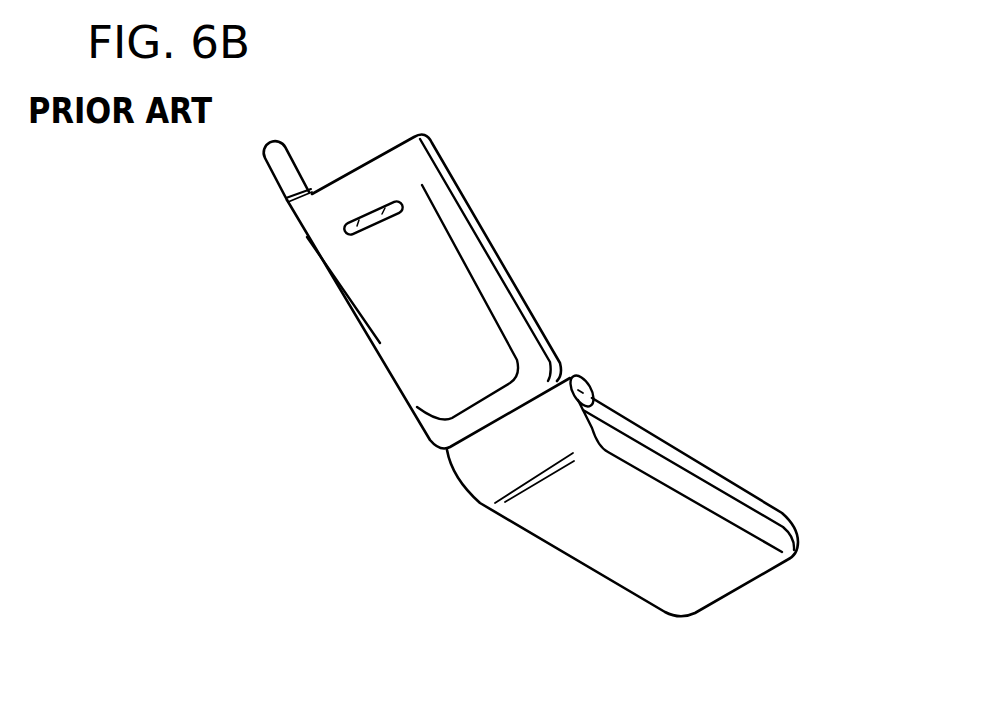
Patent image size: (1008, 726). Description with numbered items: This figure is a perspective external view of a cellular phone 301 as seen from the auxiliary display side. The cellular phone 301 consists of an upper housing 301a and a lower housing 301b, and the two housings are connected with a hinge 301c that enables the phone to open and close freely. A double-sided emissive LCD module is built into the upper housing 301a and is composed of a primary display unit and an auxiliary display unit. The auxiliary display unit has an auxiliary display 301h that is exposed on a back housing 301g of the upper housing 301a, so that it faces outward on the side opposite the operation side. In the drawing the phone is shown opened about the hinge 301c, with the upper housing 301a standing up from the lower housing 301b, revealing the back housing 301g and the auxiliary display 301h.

The cellular phone 301 is at (699, 254).
The upper housing 301a is at (478, 254).
The lower housing 301b is at (720, 483).
The hinge 301c is at (587, 382).
The back housing 301g is at (355, 184).
The auxiliary display 301h is at (347, 234).